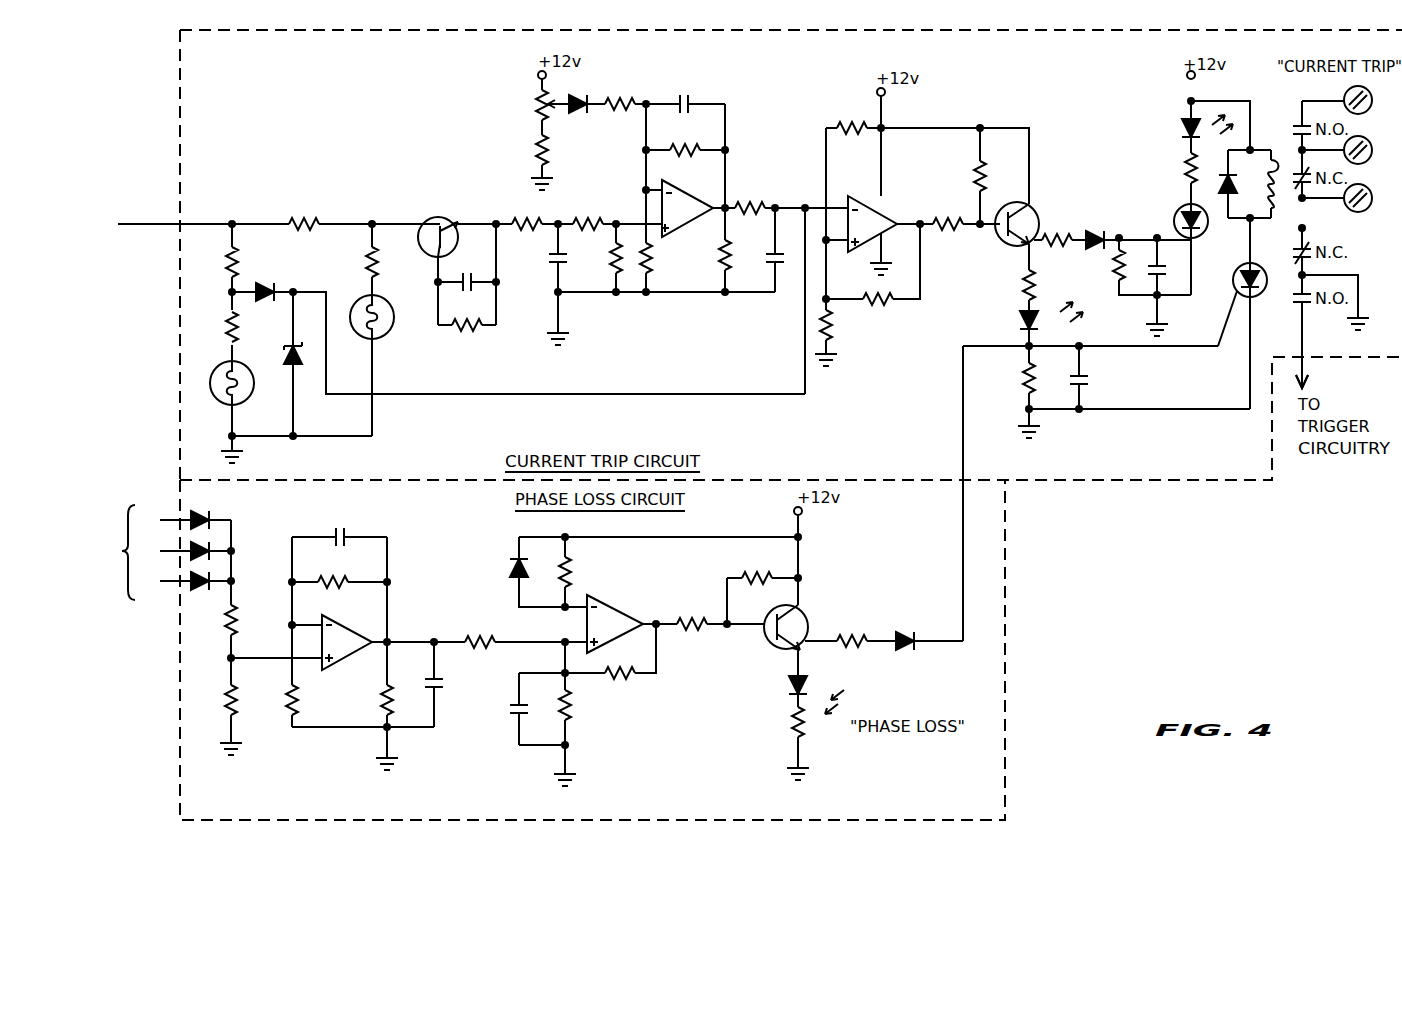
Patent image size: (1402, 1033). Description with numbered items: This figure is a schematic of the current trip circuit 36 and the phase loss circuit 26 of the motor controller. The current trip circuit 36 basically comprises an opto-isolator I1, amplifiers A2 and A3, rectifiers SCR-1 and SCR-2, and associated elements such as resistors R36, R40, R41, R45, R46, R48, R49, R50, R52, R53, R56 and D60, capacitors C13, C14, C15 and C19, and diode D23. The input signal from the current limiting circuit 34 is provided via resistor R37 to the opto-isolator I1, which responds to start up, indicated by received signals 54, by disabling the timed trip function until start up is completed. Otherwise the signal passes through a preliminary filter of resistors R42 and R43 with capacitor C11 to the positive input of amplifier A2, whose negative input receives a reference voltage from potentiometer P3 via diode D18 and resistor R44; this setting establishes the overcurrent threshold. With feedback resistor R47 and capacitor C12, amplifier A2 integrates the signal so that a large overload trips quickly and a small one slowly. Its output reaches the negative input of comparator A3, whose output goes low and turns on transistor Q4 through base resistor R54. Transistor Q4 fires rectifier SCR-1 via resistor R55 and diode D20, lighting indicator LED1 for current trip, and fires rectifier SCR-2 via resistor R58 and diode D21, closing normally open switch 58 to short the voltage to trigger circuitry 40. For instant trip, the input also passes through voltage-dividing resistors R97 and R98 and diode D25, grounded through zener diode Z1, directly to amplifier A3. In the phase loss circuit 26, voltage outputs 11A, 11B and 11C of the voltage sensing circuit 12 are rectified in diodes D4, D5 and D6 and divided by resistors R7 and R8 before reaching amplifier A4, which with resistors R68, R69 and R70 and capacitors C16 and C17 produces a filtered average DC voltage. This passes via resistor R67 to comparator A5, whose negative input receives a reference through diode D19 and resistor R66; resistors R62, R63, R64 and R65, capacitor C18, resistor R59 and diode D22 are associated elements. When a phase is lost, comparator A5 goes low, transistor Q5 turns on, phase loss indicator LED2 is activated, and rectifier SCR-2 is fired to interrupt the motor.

The current trip circuit 36 is at (178, 146).
The current limiting circuit 34 is at (133, 227).
The phase loss circuit 26 is at (1005, 694).
The voltage sensing circuit 12 is at (92, 553).
The voltage output 11A is at (160, 521).
The voltage output 11B is at (160, 552).
The voltage output 11C is at (160, 582).
The received signals 54 is at (401, 289).
The normally open switch 58 is at (1294, 310).
The trigger circuitry 40 is at (1307, 391).
The resistor R37 is at (305, 233).
The resistor R97 is at (248, 262).
The diode D25 is at (268, 284).
The resistor R98 is at (248, 327).
The zener diode Z1 is at (282, 354).
The resistor R36 is at (356, 262).
The opto-isolator I1 is at (438, 224).
The capacitor C15 is at (468, 274).
The resistor R40 is at (467, 335).
The potentiometer P3 is at (526, 105).
The diode D18 is at (581, 114).
The resistor R44 is at (618, 93).
The resistor R41 is at (559, 150).
The capacitor C12 is at (684, 94).
The feedback resistor R47 is at (686, 140).
The amplifier A2 is at (687, 208).
The resistor R43 is at (526, 212).
The resistor R42 is at (589, 212).
The capacitor C11 is at (547, 259).
The resistor R45 is at (600, 258).
The resistor R46 is at (663, 258).
The resistor R48 is at (709, 252).
The capacitor C13 is at (762, 258).
The resistor R49 is at (750, 195).
The resistor R50 is at (851, 117).
The amplifier A3 is at (872, 224).
The resistor R52 is at (856, 316).
The base resistor R54 is at (948, 212).
The resistor R53 is at (963, 176).
The transistor Q4 is at (1026, 216).
The resistor R55 is at (1056, 251).
The diode D20 is at (1098, 229).
The resistor R56 is at (1102, 265).
The capacitor C14 is at (1170, 277).
The silicon-controlled rectifier SCR-1 is at (1170, 215).
The indicator light LED1 is at (1186, 149).
The diode D23 is at (1249, 182).
The silicon-controlled rectifier SCR-2 is at (1228, 285).
The resistor R58 is at (1012, 285).
The diode D21 is at (1036, 317).
The resistor D60 is at (1012, 378).
The capacitor C19 is at (1098, 380).
The diode D4 is at (200, 510).
The diode D5 is at (205, 545).
The diode D6 is at (200, 594).
The voltage-dividing resistor R7 is at (244, 620).
The voltage-dividing resistor R8 is at (218, 700).
The capacitor C16 is at (341, 527).
The resistor R70 is at (333, 572).
The amplifier A4 is at (347, 642).
The resistor R69 is at (309, 700).
The resistor R68 is at (369, 700).
The capacitor C17 is at (449, 684).
The resistor R67 is at (480, 631).
The diode D19 is at (504, 568).
The resistor R66 is at (583, 572).
The comparator A5 is at (615, 624).
The resistor R64 is at (620, 684).
The resistor R65 is at (583, 705).
The capacitor C18 is at (504, 709).
The resistor R63 is at (694, 636).
The resistor R62 is at (756, 567).
The transistor Q5 is at (796, 620).
The resistor R59 is at (853, 629).
The diode D22 is at (909, 631).
The phase loss display indicator LED2 is at (824, 705).